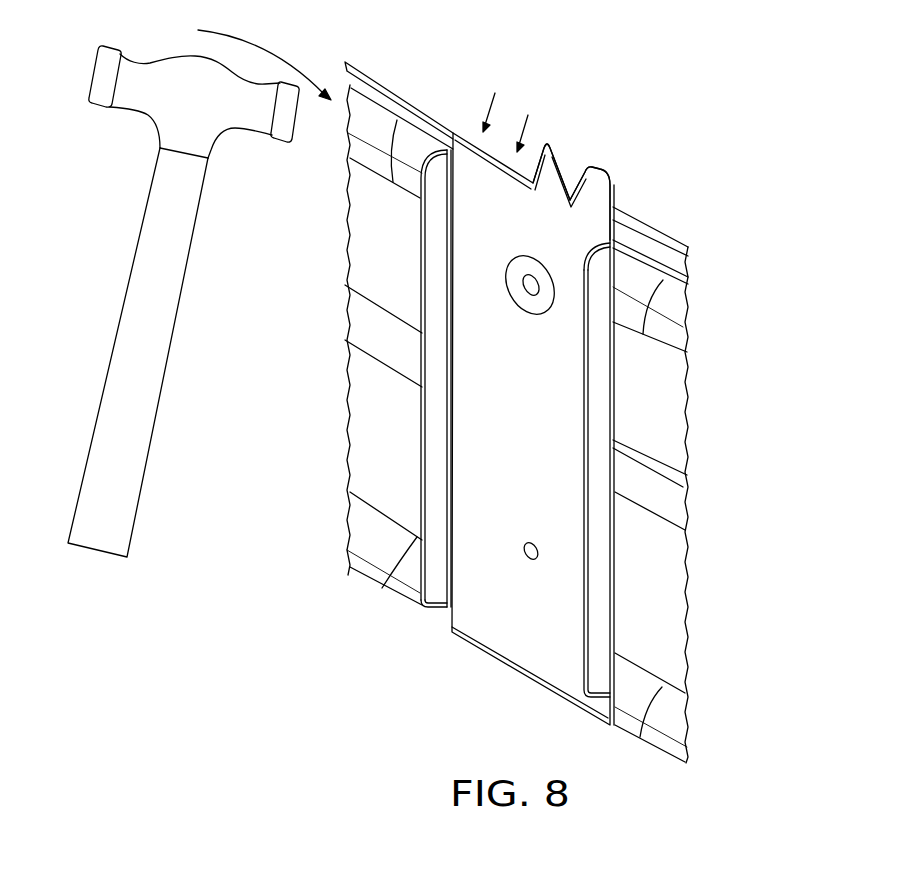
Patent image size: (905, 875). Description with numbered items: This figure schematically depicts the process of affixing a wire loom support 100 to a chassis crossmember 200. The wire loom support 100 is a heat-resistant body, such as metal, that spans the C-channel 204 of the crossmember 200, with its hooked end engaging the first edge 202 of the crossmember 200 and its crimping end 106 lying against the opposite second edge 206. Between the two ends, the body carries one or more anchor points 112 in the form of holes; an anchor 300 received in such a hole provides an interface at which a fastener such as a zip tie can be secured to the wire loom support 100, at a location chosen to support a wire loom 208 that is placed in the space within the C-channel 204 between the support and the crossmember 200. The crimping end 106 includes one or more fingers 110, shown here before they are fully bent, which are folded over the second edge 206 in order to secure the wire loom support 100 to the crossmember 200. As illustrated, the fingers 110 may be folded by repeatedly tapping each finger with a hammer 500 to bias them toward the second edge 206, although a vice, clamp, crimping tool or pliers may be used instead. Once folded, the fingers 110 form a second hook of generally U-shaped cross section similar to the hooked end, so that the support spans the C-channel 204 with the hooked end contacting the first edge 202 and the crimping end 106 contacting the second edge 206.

The wire loom support 100 is at (543, 447).
The crimping end 106 is at (590, 176).
The fingers 110 is at (548, 147).
The anchor points 112 is at (532, 562).
The chassis crossmember 200 is at (376, 578).
The first edge 202 is at (412, 603).
The C-channel 204 is at (668, 407).
The second edge 206 is at (687, 243).
The wire loom 208 is at (673, 335).
The anchor 300 is at (540, 308).
The hammer 500 is at (178, 308).